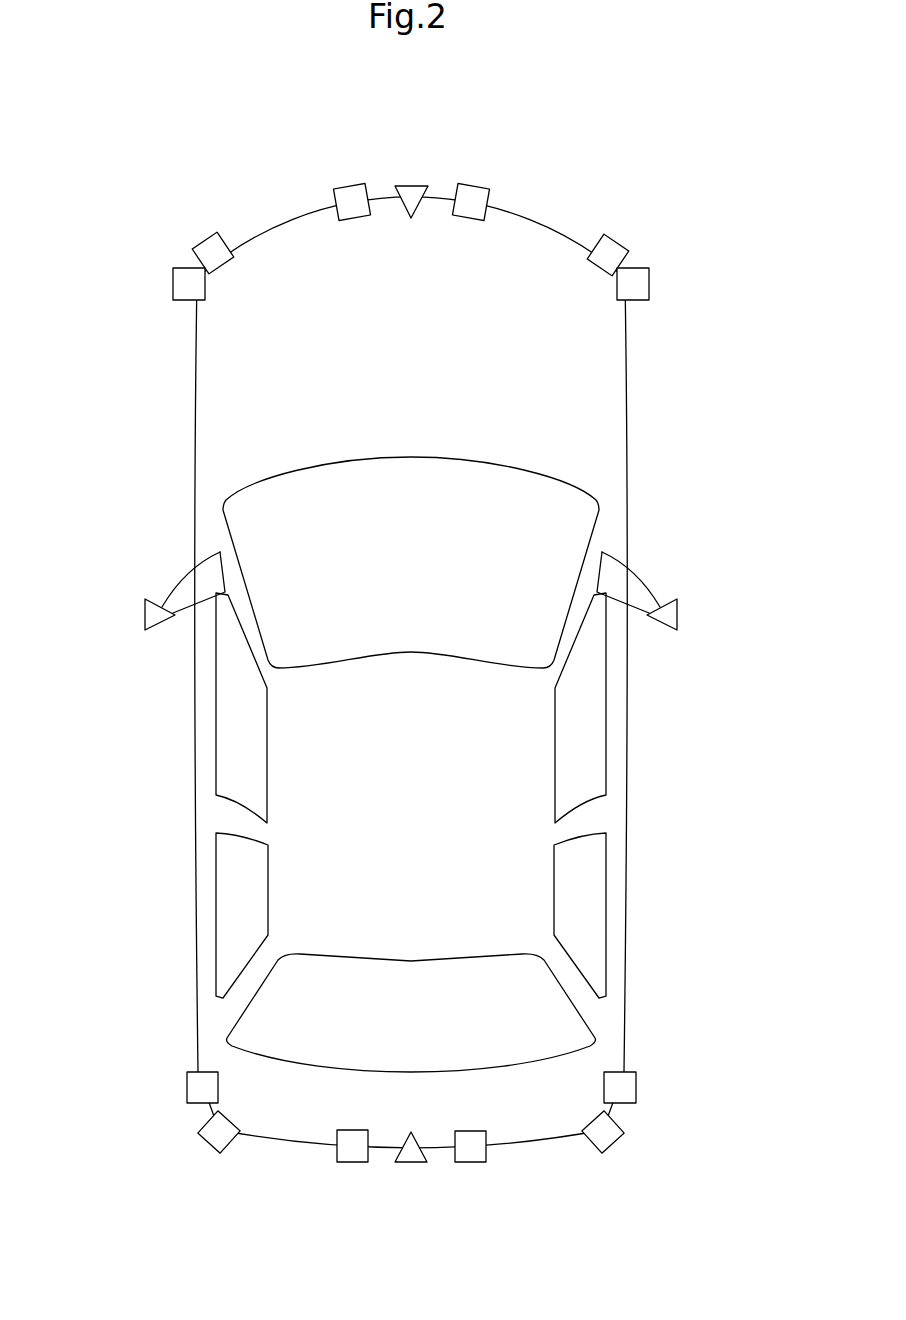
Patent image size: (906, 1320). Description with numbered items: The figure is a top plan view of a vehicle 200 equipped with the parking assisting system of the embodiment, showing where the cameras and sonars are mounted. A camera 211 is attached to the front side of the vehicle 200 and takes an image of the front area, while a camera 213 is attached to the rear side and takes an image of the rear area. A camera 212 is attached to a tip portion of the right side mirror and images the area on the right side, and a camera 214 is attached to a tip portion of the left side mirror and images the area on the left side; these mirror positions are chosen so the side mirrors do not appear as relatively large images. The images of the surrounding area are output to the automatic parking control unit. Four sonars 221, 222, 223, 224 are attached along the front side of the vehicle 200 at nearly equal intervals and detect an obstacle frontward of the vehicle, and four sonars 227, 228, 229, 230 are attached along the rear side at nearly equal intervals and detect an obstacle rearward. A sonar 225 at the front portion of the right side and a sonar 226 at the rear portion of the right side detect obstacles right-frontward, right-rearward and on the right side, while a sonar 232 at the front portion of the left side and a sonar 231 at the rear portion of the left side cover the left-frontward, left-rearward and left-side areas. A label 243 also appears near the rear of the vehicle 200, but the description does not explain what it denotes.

The vehicle 200 is at (560, 273).
The camera 211 is at (411, 186).
The camera 212 is at (677, 613).
The camera 213 is at (411, 1162).
The camera 214 is at (145, 613).
The sonar 221 is at (193, 250).
The sonar 222 is at (352, 185).
The sonar 223 is at (471, 185).
The sonar 224 is at (627, 253).
The sonar 225 is at (649, 285).
The sonar 226 is at (636, 1084).
The sonar 227 is at (625, 1130).
The sonar 228 is at (470, 1162).
The sonar 229 is at (352, 1162).
The sonar 230 is at (198, 1132).
The sonar 231 is at (187, 1088).
The sonar 232 is at (173, 285).
The rear sensor arrangement 243 is at (586, 1212).